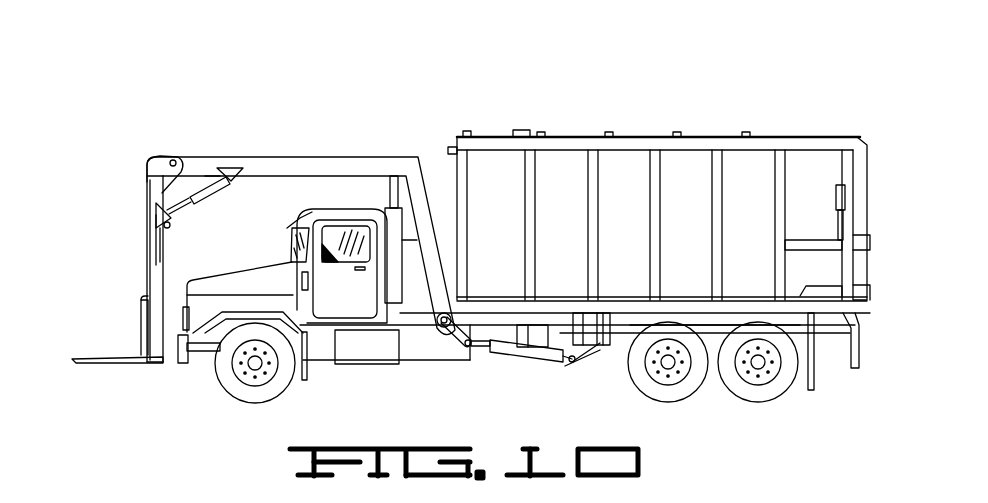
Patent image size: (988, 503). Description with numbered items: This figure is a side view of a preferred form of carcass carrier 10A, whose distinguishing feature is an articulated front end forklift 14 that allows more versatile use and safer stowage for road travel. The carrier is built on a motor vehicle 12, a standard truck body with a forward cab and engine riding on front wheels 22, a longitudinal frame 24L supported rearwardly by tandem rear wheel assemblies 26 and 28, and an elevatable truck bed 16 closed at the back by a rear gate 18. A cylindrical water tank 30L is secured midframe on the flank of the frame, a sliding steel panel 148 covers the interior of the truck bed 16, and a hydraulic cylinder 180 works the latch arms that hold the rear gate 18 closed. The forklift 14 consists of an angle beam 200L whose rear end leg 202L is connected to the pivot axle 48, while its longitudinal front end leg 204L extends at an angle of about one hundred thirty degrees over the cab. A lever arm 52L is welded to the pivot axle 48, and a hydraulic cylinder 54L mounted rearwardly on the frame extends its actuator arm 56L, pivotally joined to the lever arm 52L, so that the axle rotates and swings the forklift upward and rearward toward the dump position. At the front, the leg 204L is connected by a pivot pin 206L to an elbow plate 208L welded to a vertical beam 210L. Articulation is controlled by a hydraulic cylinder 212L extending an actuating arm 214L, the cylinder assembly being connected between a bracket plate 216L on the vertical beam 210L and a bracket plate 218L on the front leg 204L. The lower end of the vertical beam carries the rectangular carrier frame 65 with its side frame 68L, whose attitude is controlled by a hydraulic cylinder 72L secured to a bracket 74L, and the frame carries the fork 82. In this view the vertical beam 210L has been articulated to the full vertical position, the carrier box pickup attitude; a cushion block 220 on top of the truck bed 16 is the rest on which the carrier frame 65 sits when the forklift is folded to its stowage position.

The carcass carrier 10A is at (630, 90).
The motor vehicle 12 is at (302, 220).
The front end forklift 14 is at (348, 160).
The truck bed 16 is at (805, 183).
The rear gate 18 is at (860, 190).
The front wheels 22 is at (235, 390).
The longitudinal frame 24L is at (717, 327).
The tandem rear wheel assembly 26 is at (670, 395).
The tandem rear wheel assembly 28 is at (777, 393).
The water tank 30L is at (597, 333).
The pivot axle 48 is at (438, 330).
The lever arm 52L is at (450, 330).
The hydraulic cylinder 54L is at (545, 357).
The actuator arm 56L is at (480, 343).
The carrier frame 65 is at (147, 297).
The side frame 68L is at (145, 315).
The hydraulic cylinder 72L is at (167, 243).
The bracket 74L is at (170, 223).
The fork 82 is at (110, 363).
The steel panel 148 is at (635, 137).
The hydraulic cylinder 180 is at (840, 205).
The angle beam 200L is at (282, 158).
The rear end leg 202L is at (413, 190).
The front end leg 204L is at (257, 160).
The pivot pin 206L is at (173, 167).
The elbow plate 208L is at (153, 177).
The vertical beam 210L is at (153, 255).
The hydraulic cylinder 212L is at (213, 176).
The actuating arm 214L is at (173, 207).
The bracket plate 216L is at (167, 220).
The bracket plate 218L is at (232, 168).
The cushion block 220 is at (522, 130).